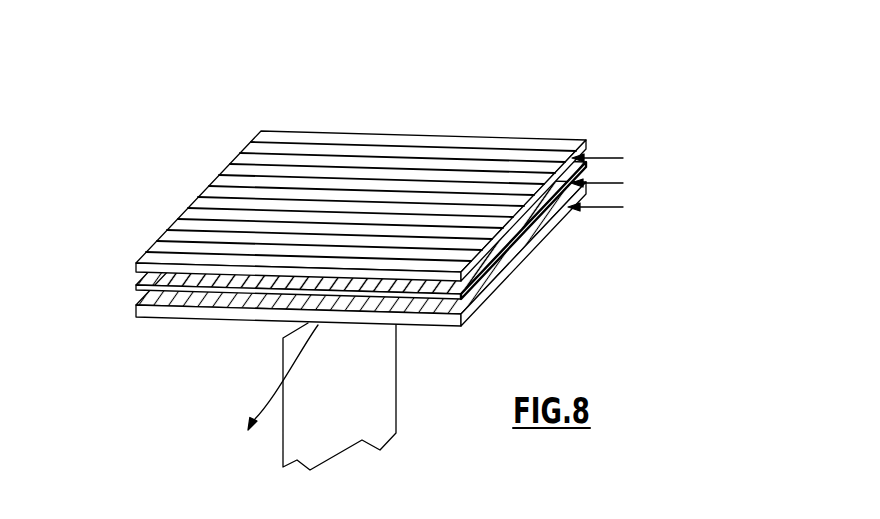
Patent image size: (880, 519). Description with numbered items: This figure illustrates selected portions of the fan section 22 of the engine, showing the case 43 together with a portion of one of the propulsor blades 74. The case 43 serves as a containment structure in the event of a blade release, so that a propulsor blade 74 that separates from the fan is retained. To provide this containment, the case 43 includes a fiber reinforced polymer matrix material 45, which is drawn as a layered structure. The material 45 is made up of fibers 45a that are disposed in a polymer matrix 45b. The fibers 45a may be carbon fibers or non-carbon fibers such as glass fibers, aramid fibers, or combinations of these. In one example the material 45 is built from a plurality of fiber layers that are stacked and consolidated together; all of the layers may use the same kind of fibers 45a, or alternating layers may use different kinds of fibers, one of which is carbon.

The fan section 22 is at (332, 210).
The case 43 is at (118, 292).
The fiber reinforced polymer matrix material 45 is at (527, 252).
The fibers 45a is at (513, 157).
The polymer matrix 45b is at (493, 165).
The propulsor blade 74 is at (383, 400).